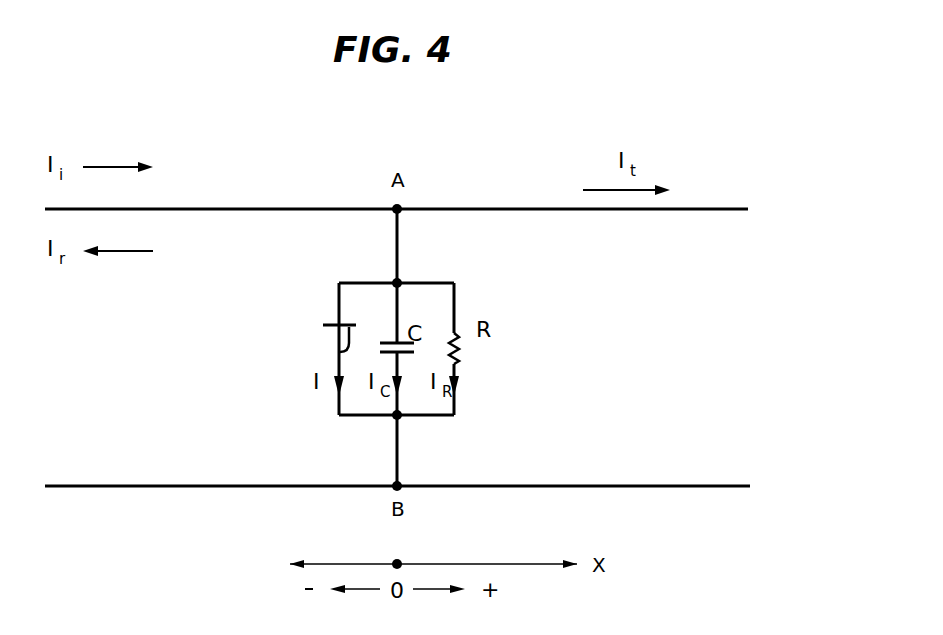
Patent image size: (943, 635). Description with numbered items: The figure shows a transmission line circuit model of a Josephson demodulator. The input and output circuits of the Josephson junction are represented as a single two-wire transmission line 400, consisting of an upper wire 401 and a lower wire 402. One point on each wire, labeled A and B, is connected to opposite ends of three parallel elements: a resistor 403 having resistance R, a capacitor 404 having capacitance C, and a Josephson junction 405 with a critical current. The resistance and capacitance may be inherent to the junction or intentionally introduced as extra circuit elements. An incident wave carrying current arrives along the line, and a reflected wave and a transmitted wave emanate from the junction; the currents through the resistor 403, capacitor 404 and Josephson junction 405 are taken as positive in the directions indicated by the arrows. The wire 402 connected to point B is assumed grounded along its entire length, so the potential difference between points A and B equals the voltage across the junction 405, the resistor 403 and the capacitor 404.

The two-wire transmission line 400 is at (75, 346).
The wire 401 is at (258, 209).
The wire 402 is at (216, 487).
The resistor 403 is at (465, 341).
The capacitor 404 is at (389, 343).
The Josephson junction 405 is at (330, 341).